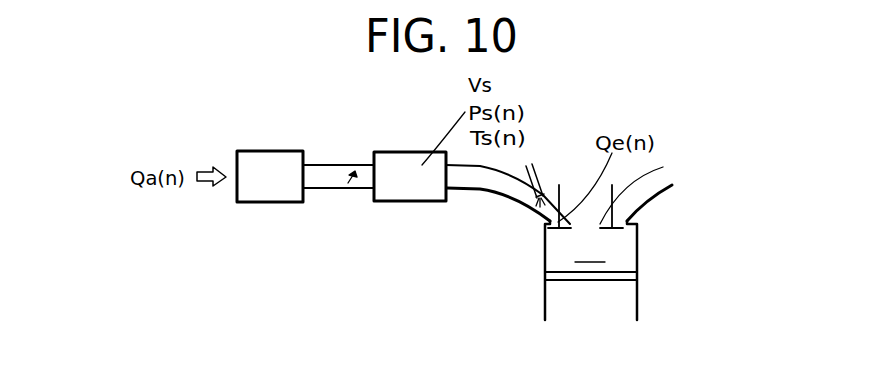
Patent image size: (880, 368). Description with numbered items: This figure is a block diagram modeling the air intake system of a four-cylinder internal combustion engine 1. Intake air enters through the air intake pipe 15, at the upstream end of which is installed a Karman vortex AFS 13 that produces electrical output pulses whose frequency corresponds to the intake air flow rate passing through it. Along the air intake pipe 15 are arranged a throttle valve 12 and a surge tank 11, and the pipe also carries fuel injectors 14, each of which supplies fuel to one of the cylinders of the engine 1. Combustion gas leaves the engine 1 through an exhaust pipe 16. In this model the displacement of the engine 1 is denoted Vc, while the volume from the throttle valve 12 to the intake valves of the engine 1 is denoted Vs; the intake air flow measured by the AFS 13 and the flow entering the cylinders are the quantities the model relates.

The internal combustion engine 1 is at (637, 260).
The surge tank 11 is at (415, 202).
The throttle valve 12 is at (351, 189).
The Karman vortex AFS 13 is at (271, 203).
The fuel injector 14 is at (538, 175).
The air intake pipe 15 is at (506, 199).
The exhaust pipe 16 is at (647, 207).